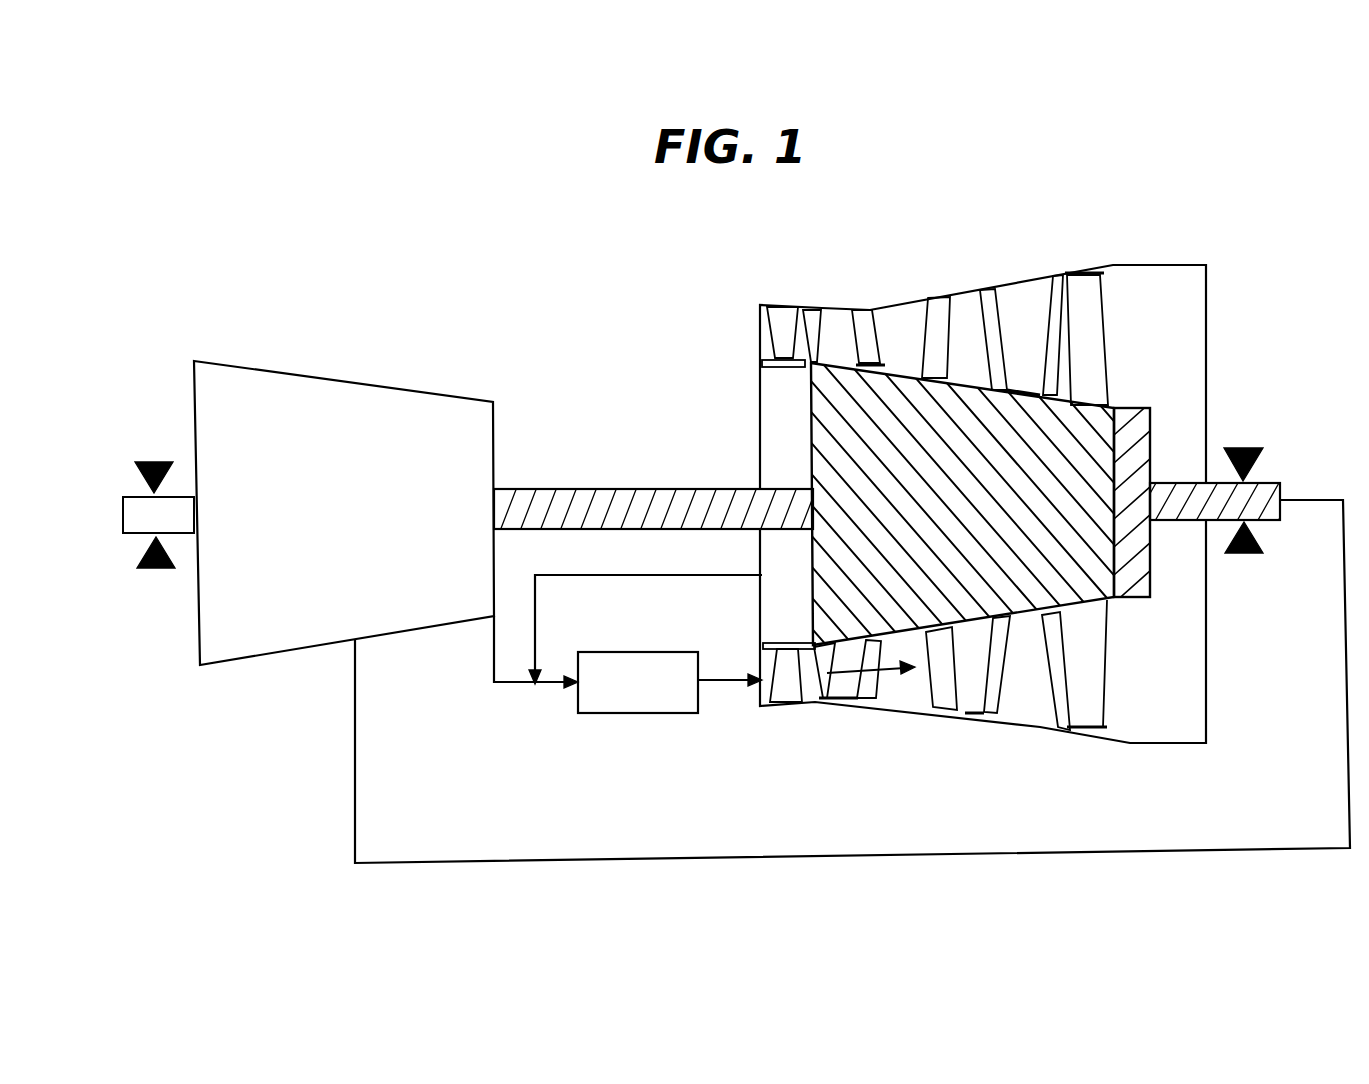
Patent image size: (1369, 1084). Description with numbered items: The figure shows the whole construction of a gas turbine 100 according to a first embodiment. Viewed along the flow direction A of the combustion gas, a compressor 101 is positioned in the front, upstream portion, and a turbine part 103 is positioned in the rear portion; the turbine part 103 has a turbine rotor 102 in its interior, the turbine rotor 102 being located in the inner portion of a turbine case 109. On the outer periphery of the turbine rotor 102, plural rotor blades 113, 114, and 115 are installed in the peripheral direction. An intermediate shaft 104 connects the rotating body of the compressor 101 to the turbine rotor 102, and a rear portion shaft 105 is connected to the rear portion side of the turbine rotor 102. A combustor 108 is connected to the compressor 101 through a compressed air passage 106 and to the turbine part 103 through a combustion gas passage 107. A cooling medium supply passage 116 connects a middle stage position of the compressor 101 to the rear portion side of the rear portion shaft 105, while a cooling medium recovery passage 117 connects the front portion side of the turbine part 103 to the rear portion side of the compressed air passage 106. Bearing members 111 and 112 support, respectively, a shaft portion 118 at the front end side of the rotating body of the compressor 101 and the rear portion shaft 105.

The gas turbine 100 is at (310, 252).
The compressor 101 is at (277, 390).
The turbine rotor 102 is at (973, 565).
The turbine part 103 is at (803, 292).
The intermediate shaft 104 is at (592, 497).
The rear portion shaft 105 is at (1275, 483).
The compressed air passage 106 is at (512, 690).
The combustion gas passage 107 is at (722, 690).
The combustor 108 is at (634, 714).
The turbine case 109 is at (1170, 265).
The bearing member 111 is at (158, 572).
The bearing member 112 is at (1244, 558).
The rotor blade 113 is at (842, 322).
The rotor blade 114 is at (966, 312).
The rotor blade 115 is at (1077, 298).
The cooling medium supply passage 116 is at (355, 797).
The cooling medium recovery passage 117 is at (595, 577).
The shaft portion 118 is at (137, 516).
The flow direction of combustion gas A is at (848, 675).